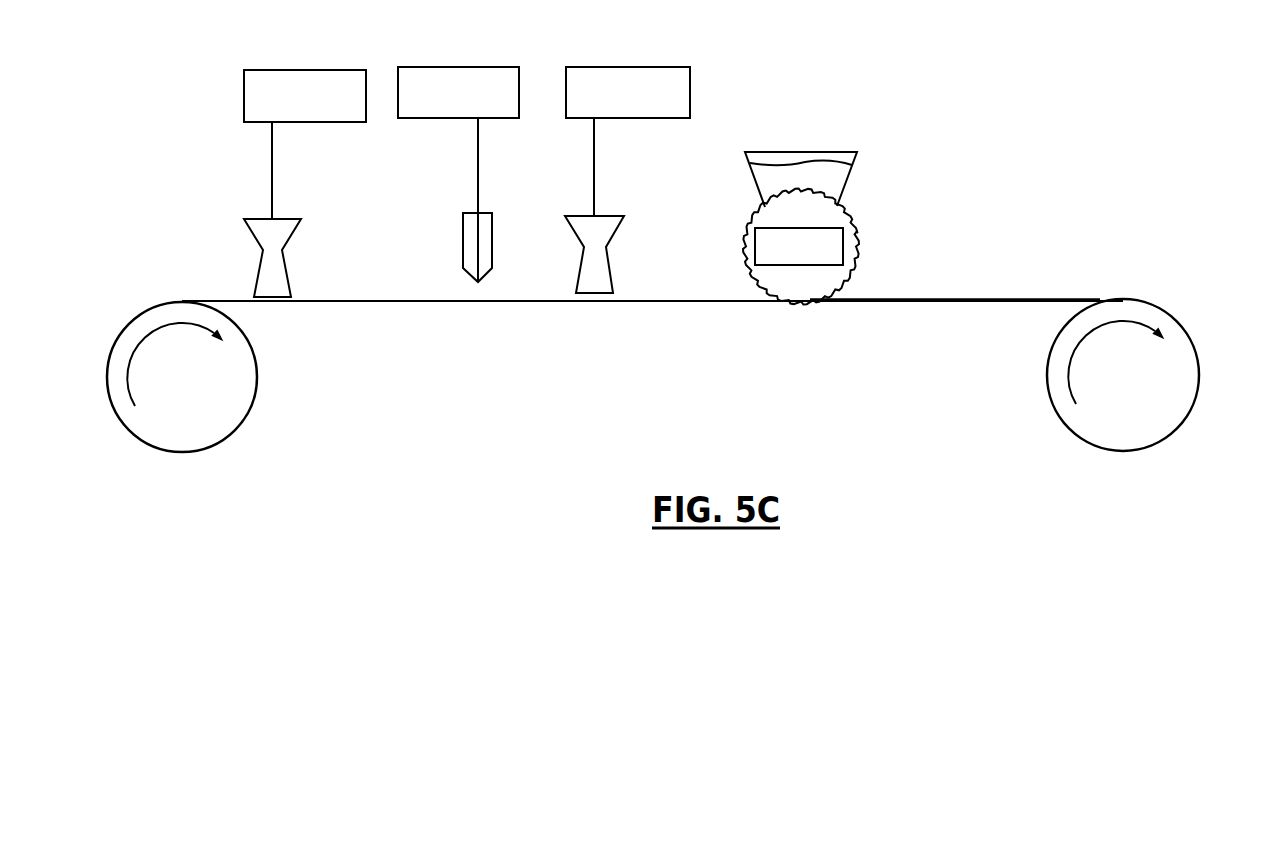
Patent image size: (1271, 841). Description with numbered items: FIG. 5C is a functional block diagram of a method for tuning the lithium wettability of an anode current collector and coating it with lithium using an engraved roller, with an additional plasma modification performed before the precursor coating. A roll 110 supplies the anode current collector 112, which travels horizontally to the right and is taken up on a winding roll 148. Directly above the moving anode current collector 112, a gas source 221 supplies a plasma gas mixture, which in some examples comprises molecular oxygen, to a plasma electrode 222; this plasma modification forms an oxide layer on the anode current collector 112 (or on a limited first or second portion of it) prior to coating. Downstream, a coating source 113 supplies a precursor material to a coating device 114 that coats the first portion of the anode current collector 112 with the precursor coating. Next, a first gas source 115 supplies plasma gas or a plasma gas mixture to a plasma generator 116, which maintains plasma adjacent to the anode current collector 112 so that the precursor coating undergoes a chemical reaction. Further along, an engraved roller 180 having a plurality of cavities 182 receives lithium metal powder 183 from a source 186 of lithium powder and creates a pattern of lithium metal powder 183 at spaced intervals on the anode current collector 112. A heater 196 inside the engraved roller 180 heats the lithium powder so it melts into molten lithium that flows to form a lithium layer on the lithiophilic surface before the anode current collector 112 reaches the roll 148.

The roll 110 is at (258, 383).
The anode current collector 112 is at (224, 300).
The coating source 113 is at (460, 67).
The coating device 114 is at (463, 237).
The first gas source 115 is at (690, 92).
The plasma generator 116 is at (590, 216).
The roll 148 is at (1076, 434).
The engraved roller 180 is at (855, 222).
The cavities 182 is at (866, 232).
The lithium metal powder 183 is at (778, 184).
The source of lithium powder 186 is at (848, 182).
The heater 196 is at (755, 248).
The gas source 221 is at (285, 70).
The plasma electrode 222 is at (268, 219).